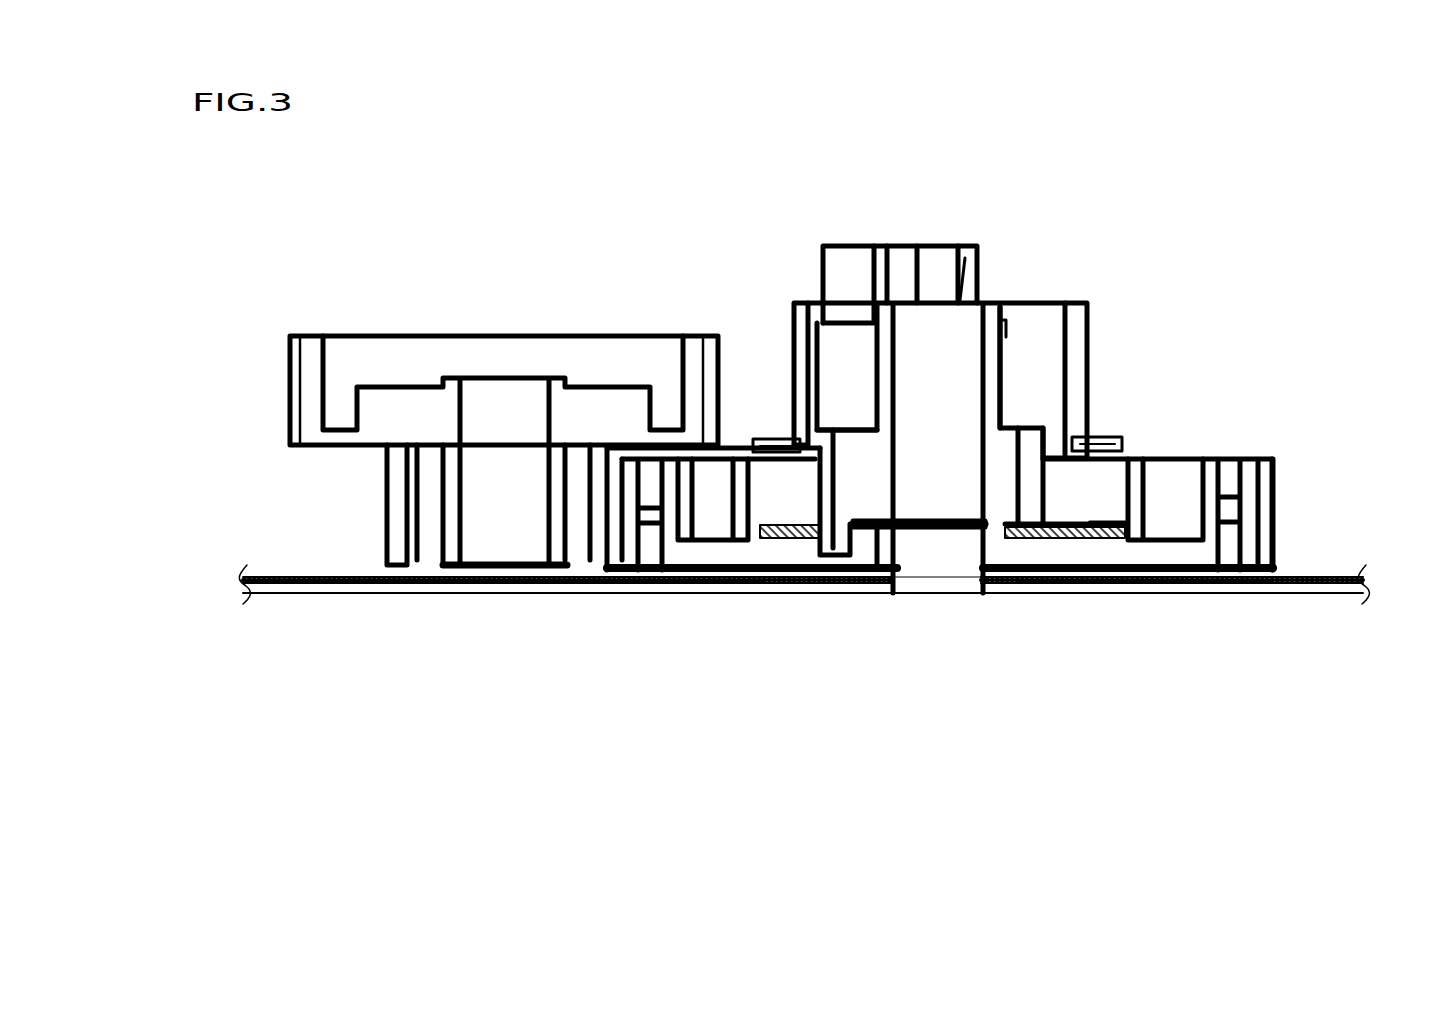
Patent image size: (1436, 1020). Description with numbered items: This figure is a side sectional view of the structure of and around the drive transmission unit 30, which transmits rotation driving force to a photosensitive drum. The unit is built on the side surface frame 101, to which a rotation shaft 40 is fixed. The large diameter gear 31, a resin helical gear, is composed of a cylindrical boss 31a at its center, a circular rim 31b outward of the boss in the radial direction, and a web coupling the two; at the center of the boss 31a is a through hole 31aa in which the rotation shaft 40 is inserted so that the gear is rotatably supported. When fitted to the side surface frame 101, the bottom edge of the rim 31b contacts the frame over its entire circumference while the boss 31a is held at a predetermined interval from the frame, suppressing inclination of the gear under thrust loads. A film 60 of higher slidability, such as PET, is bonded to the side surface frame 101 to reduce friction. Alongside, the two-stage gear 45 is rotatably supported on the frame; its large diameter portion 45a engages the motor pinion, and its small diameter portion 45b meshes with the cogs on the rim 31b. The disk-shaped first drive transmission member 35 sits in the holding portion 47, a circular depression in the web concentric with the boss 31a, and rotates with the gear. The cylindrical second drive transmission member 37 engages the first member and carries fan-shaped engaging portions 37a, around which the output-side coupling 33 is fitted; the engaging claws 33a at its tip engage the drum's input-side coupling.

The drive transmission unit 30 is at (1203, 290).
The large diameter gear 31 is at (987, 510).
The boss 31a is at (878, 580).
The through hole 31aa is at (897, 560).
The rim 31b is at (1273, 500).
The output-side coupling 33 is at (950, 328).
The engaging claws 33a is at (838, 270).
The first drive transmission member 35 is at (1083, 543).
The second drive transmission member 37 is at (904, 334).
The engaging portion 37a is at (843, 423).
The rotation shaft 40 is at (950, 580).
The two-stage gear 45 is at (430, 450).
The large diameter portion 45a is at (287, 380).
The small diameter portion 45b is at (387, 540).
The holding portion 47 is at (1095, 492).
The film 60 is at (313, 577).
The side surface frame 101 is at (1302, 587).